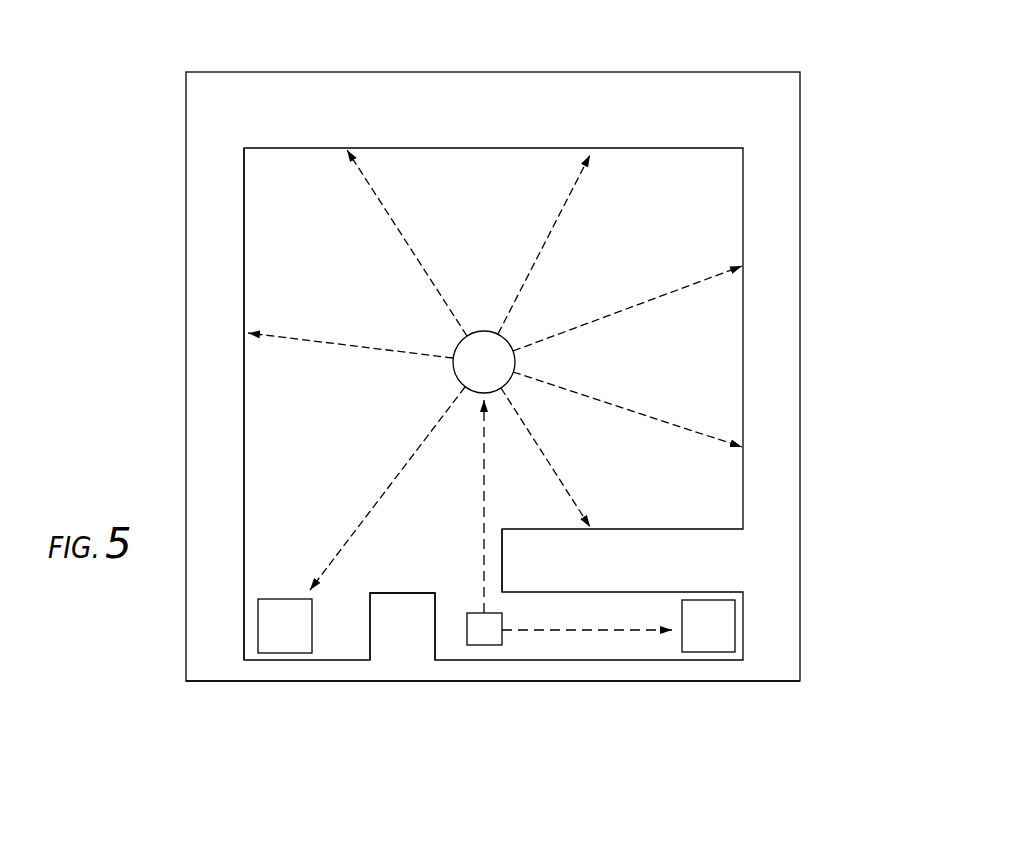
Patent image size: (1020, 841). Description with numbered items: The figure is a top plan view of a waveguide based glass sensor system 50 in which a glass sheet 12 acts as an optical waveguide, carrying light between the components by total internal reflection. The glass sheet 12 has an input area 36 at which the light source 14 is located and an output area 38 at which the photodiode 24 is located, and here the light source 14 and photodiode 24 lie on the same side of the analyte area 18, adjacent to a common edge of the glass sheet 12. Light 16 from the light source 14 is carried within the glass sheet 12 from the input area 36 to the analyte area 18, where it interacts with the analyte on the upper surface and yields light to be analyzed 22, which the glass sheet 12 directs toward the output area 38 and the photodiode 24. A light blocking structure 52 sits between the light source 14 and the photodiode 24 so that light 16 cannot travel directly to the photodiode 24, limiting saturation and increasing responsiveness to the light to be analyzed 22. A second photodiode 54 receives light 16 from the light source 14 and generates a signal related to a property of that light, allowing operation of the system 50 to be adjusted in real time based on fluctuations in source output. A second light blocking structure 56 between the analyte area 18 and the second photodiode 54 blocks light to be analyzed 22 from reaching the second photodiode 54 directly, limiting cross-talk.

The waveguide based glass sensor system 50 is at (900, 188).
The glass sheet 12 is at (710, 193).
The input area 36 is at (462, 686).
The second light blocking structure 56 is at (690, 558).
The light blocking structure 52 is at (390, 640).
The light 16 is at (485, 558).
The output area 38 is at (247, 628).
The analyte area 18 is at (479, 328).
The light to be analyzed 22 is at (370, 513).
The photodiode 24 is at (270, 642).
The light source 14 is at (487, 642).
The second photodiode 54 is at (727, 626).